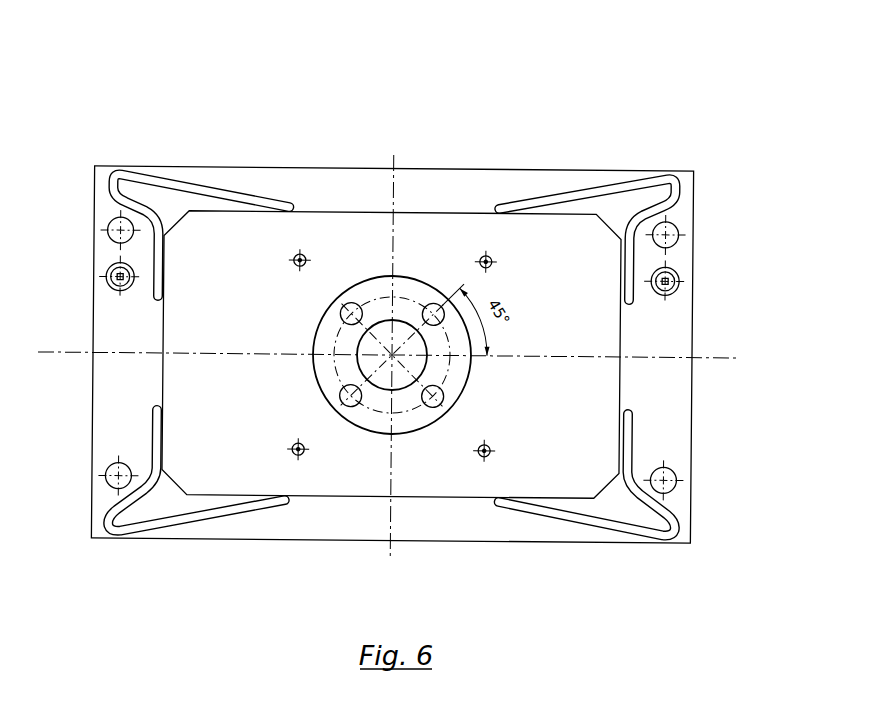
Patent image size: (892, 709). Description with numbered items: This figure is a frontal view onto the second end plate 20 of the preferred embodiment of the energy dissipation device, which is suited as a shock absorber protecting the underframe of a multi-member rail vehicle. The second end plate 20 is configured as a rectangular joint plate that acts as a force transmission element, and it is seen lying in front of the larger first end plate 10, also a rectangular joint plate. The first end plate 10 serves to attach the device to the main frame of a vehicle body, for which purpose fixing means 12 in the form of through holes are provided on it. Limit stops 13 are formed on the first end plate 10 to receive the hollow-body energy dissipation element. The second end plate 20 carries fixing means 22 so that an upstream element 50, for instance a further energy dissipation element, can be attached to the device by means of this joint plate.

The first end plate 10 is at (392, 294).
The fixing means 12 is at (724, 164).
The limit stop 13 is at (169, 169).
The second end plate 20 is at (421, 293).
The fixing means 22 is at (241, 182).
The upstream element 50 is at (356, 233).